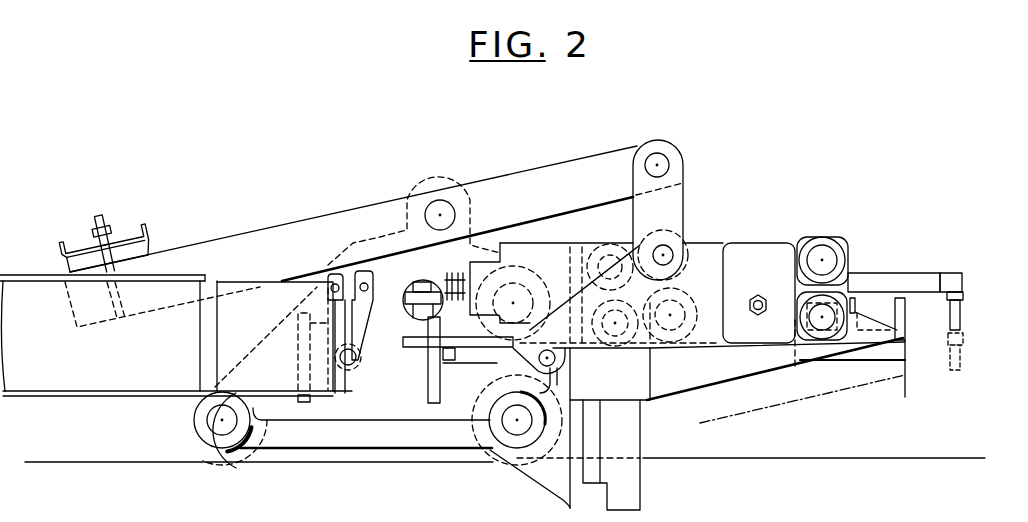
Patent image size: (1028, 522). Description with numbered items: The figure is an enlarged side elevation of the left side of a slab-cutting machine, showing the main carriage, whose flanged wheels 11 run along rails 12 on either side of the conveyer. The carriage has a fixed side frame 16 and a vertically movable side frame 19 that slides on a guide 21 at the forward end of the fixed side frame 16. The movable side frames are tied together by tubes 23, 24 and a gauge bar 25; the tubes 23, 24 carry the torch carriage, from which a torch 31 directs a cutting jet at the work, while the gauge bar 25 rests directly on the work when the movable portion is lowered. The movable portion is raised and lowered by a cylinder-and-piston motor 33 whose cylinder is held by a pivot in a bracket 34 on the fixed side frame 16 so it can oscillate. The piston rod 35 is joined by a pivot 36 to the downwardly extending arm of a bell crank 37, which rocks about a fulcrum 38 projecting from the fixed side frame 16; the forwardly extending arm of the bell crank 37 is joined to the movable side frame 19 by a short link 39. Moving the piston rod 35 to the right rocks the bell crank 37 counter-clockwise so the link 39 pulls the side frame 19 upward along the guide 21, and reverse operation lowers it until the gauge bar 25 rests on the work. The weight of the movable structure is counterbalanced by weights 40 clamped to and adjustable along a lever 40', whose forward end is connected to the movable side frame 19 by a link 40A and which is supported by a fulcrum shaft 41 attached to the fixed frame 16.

The flanged wheels 11 is at (187, 428).
The rails 12 is at (83, 473).
The fixed side frames 16 is at (288, 378).
The movable side frames 19 is at (663, 385).
The guides 21 is at (630, 433).
The tubes 23 is at (840, 245).
The tubes 24 is at (717, 273).
The gauge bar 25 is at (905, 317).
The torch 31 is at (947, 280).
The cylinder-and-piston motors 33 is at (397, 377).
The brackets 34 is at (360, 313).
The piston rod 35 is at (490, 358).
The pivot 36 is at (557, 362).
The bell crank 37 is at (565, 233).
The fulcrum 38 is at (517, 206).
The link 39 is at (662, 352).
The weights 40 is at (109, 223).
The lever 40' is at (353, 209).
The link 40A is at (660, 218).
The fulcrum shaft 41 is at (447, 210).